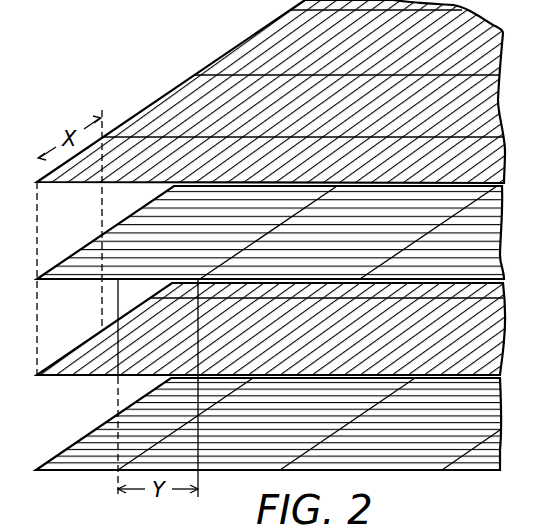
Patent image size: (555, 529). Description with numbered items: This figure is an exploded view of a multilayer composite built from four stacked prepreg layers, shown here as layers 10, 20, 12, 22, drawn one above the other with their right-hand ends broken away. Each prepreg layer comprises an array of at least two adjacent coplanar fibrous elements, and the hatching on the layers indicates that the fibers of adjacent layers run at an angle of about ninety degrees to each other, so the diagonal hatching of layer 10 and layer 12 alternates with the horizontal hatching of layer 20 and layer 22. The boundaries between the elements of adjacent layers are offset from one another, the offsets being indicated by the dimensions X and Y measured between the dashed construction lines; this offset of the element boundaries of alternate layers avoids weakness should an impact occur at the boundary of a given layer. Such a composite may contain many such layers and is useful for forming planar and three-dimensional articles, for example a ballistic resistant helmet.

The first layer 10 is at (258, 32).
The second layer 20 is at (76, 253).
The third layer 12 is at (76, 347).
The fourth layer 22 is at (68, 449).